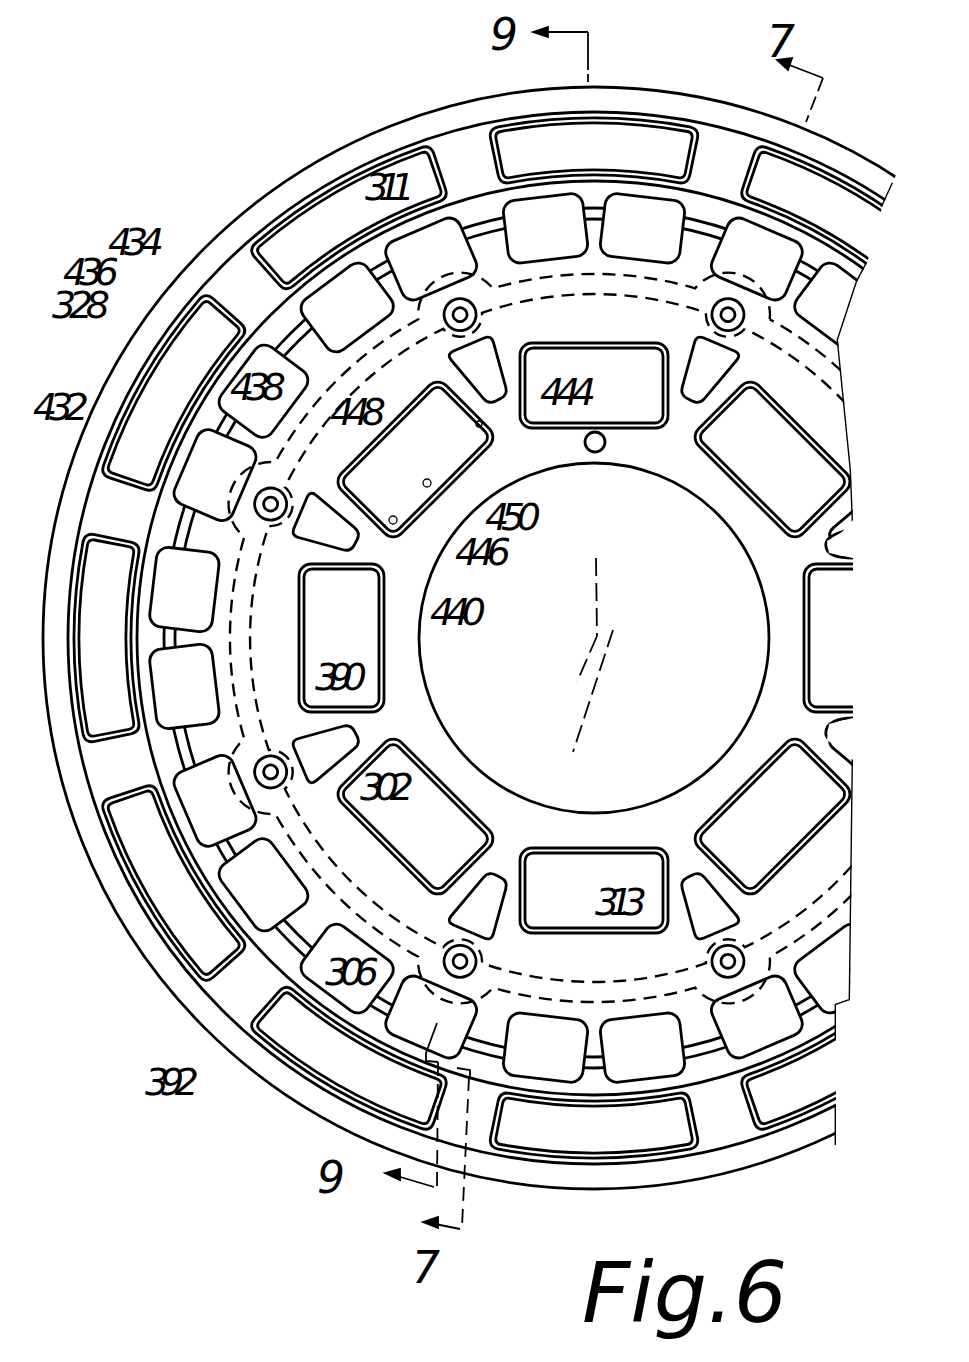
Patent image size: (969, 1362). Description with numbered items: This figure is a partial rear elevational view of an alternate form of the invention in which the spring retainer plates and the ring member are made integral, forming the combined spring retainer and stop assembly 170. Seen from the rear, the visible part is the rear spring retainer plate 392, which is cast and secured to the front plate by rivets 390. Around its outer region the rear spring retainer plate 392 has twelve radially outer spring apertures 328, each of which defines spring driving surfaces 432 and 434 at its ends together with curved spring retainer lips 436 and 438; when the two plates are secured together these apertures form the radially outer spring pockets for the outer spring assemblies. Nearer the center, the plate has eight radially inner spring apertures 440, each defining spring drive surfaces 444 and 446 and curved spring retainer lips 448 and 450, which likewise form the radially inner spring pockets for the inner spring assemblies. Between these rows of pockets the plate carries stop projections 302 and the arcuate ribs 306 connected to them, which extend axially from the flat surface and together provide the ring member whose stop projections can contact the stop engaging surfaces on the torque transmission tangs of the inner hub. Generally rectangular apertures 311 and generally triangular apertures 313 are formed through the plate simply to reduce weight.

The combined spring retainer and stop assembly 170 is at (506, 638).
The generally rectangular apertures 311 is at (420, 237).
The spring driving surface 434 is at (200, 300).
The curved spring retainer lip 436 is at (183, 320).
The radially outer spring apertures 328 is at (150, 372).
The curved spring retainer lip 438 is at (188, 396).
The spring driving surface 432 is at (110, 458).
The curved spring retainer lip 448 is at (402, 418).
The spring drive surface 444 is at (482, 423).
The curved spring retainer lip 450 is at (431, 485).
The spring drive surface 446 is at (396, 522).
The radially inner spring apertures 440 is at (368, 612).
The rivets 390 is at (272, 762).
The stop projections 302 is at (297, 792).
The arcuate ribs 306 is at (378, 905).
The generally triangular apertures 313 is at (692, 903).
The rear spring retainer plate 392 is at (506, 638).